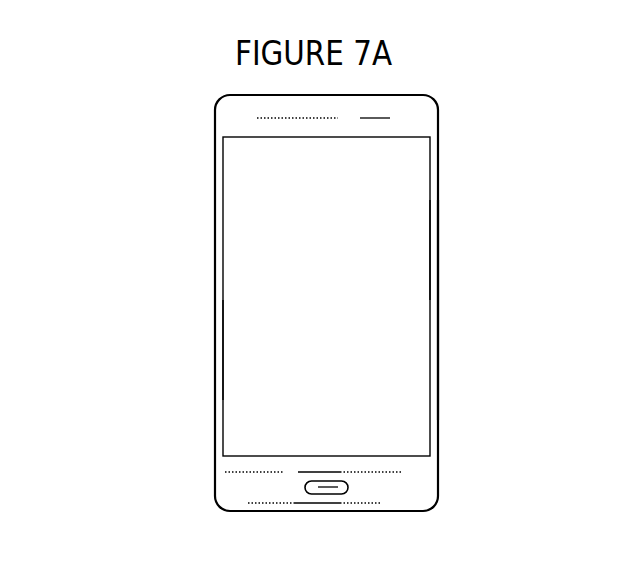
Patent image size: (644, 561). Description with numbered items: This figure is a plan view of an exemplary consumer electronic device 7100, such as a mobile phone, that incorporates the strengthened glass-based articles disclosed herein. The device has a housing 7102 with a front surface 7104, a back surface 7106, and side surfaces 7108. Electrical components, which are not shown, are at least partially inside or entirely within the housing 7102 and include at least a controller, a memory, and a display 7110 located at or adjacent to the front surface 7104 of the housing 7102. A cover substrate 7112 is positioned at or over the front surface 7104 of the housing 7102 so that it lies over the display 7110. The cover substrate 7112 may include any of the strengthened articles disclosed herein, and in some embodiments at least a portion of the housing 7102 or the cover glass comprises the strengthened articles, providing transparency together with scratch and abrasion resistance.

The consumer electronic device 7100 is at (460, 142).
The housing 7102 is at (232, 118).
The front surface 7104 is at (415, 488).
The back surface 7106 is at (245, 252).
The side surfaces 7108 is at (437, 340).
The display 7110 is at (385, 258).
The cover substrate 7112 is at (255, 358).